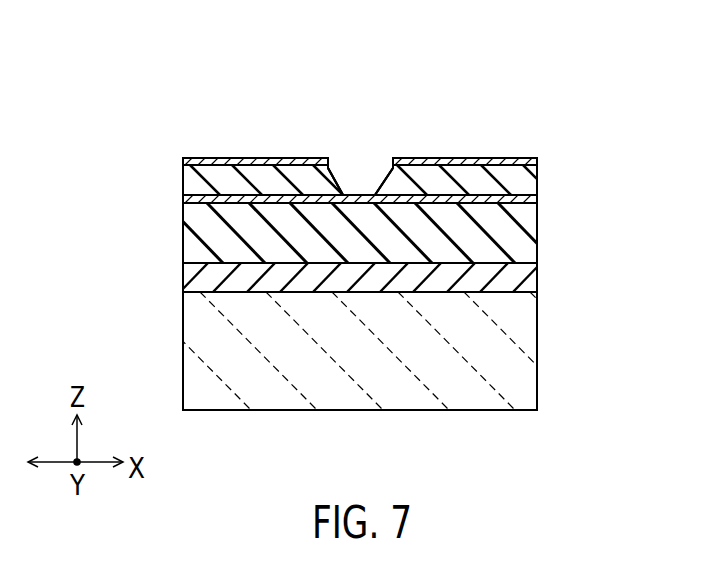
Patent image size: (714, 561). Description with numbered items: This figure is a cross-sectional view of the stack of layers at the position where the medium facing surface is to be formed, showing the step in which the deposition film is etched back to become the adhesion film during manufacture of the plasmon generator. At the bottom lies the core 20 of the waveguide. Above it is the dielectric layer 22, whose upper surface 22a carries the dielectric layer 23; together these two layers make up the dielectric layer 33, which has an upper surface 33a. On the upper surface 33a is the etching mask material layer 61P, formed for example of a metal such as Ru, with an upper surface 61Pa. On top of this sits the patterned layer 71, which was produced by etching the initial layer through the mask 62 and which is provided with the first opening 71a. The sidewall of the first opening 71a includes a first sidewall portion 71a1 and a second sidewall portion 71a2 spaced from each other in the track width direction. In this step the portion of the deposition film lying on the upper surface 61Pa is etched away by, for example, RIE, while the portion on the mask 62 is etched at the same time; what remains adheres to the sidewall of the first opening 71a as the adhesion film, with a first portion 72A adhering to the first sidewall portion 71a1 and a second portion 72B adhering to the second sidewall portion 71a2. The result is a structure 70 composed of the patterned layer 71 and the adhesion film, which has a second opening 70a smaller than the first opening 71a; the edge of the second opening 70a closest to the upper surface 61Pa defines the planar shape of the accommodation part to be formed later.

The core 20 is at (528, 332).
The dielectric layer 22 is at (538, 280).
The upper surface of the dielectric layer 22a is at (202, 260).
The dielectric layer 23 is at (538, 245).
The dielectric layer 33 is at (416, 251).
The upper surface of the dielectric layer 33a is at (212, 198).
The etching mask material layer 61P is at (538, 200).
The upper surface of the etching mask material layer 61Pa is at (225, 195).
The mask 62 is at (538, 162).
The structure 70 is at (398, 143).
The second opening 70a is at (363, 186).
The patterned layer 71 is at (538, 183).
The first opening 71a is at (333, 163).
The first sidewall portion 71a1 is at (260, 158).
The second sidewall portion 71a2 is at (390, 182).
The first portion of the adhesion film 72A is at (351, 160).
The second portion of the adhesion film 72B is at (372, 160).